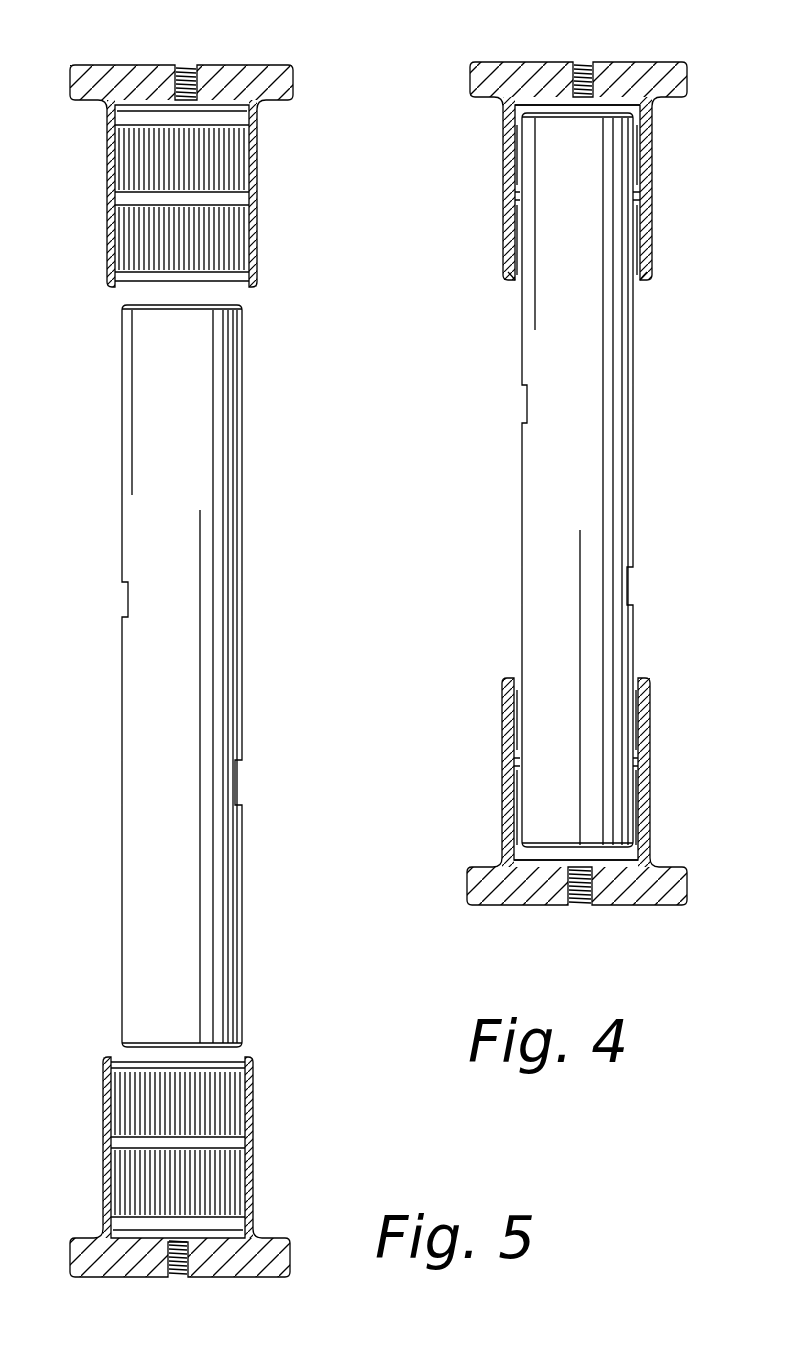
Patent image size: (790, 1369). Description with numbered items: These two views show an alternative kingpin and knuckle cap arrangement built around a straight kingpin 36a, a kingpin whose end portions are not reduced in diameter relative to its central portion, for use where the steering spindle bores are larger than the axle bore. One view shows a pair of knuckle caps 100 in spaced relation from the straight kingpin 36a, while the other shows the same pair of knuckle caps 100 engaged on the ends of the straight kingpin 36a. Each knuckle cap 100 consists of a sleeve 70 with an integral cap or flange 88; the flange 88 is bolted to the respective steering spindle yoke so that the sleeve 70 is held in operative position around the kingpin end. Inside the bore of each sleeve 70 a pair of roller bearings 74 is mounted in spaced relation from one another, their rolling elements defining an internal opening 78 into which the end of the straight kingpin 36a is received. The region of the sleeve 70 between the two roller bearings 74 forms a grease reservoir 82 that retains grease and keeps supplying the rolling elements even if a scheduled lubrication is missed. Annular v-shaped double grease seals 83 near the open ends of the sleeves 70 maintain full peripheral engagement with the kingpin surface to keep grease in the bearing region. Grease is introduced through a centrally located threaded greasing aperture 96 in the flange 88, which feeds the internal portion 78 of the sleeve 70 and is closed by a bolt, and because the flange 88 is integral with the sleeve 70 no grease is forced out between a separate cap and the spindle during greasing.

In FIG. 5, the straight kingpin 36a is at (210, 630).
In FIG. 4, the straight kingpin 36a is at (602, 442).
In FIG. 5, the sleeve 70 is at (256, 212).
In FIG. 4, the sleeve 70 is at (652, 160).
In FIG. 5, the roller bearings 74 is at (252, 153).
In FIG. 4, the roller bearings 74 is at (640, 138).
In FIG. 5, the internal opening 78 is at (238, 110).
In FIG. 4, the internal opening 78 is at (645, 105).
In FIG. 5, the grease reservoir 82 is at (233, 200).
In FIG. 4, the grease reservoir 82 is at (640, 197).
In FIG. 5, the double grease seals 83 is at (245, 286).
In FIG. 4, the double grease seals 83 is at (645, 282).
In FIG. 5, the flange 88 is at (230, 77).
In FIG. 4, the flange 88 is at (625, 75).
In FIG. 5, the threaded greasing aperture 96 is at (185, 63).
In FIG. 4, the threaded greasing aperture 96 is at (580, 62).
In FIG. 5, the knuckle cap 100 is at (271, 51).
In FIG. 4, the knuckle cap 100 is at (670, 48).